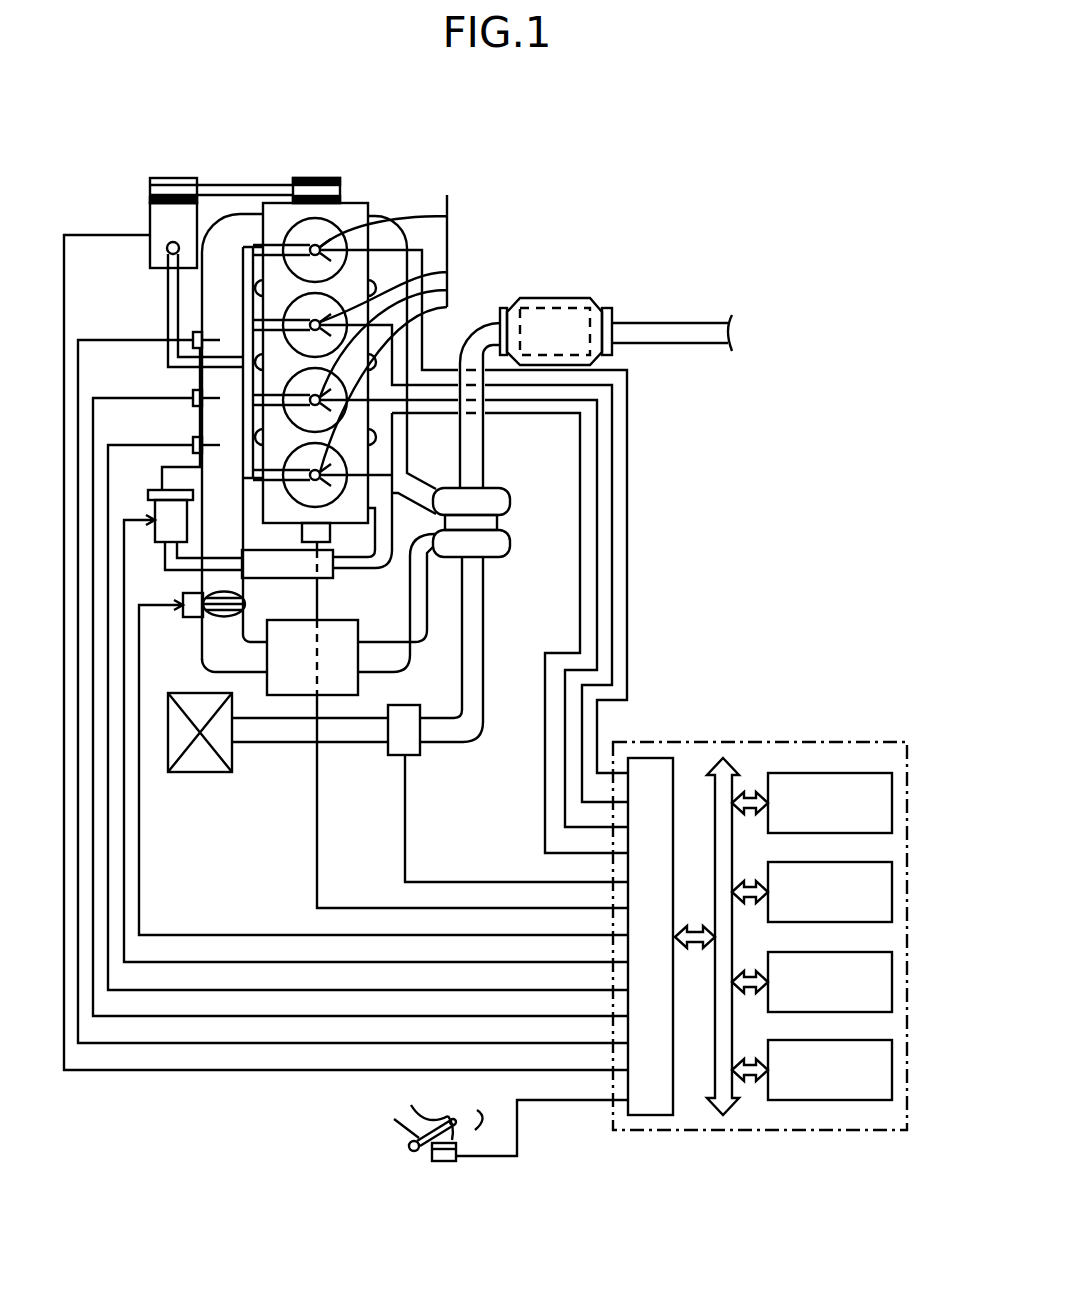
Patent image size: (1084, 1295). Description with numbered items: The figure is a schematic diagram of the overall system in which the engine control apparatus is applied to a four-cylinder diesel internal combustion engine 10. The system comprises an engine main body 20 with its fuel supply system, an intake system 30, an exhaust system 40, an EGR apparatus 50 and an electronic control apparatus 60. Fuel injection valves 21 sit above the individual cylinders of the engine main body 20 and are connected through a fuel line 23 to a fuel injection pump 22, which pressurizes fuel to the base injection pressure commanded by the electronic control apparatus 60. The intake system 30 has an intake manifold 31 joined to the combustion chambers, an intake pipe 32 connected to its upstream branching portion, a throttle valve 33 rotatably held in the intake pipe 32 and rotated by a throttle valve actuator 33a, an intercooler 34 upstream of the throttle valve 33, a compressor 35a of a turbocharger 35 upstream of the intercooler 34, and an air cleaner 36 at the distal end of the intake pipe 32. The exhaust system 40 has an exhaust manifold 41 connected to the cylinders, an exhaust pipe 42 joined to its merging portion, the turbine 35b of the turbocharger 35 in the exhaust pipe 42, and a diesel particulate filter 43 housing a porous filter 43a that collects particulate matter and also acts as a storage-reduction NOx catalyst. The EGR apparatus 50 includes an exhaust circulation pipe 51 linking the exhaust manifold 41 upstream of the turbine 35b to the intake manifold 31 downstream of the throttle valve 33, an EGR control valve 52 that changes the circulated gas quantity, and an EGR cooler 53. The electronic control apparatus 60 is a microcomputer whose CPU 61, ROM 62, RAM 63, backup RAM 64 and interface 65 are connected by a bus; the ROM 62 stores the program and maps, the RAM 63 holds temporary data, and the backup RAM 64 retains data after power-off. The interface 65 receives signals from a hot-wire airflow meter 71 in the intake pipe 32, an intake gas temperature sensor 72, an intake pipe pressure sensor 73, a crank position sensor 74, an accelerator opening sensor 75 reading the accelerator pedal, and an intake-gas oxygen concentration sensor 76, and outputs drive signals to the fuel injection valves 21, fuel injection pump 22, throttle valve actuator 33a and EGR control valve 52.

The internal combustion engine 10 is at (378, 131).
The engine main body 20 is at (358, 344).
The fuel injection valves 21 is at (370, 200).
The fuel injection pump 22 is at (150, 222).
The fuel line 23 is at (168, 297).
The intake system 30 is at (345, 624).
The intake manifold 31 is at (199, 420).
The intake pipe 32 is at (390, 673).
The throttle valve 33 is at (383, 764).
The throttle valve actuator 33a is at (190, 620).
The intercooler 34 is at (264, 676).
The turbocharger 35 is at (499, 523).
The compressor 35a is at (491, 558).
The turbine 35b is at (488, 488).
The air cleaner 36 is at (200, 772).
The exhaust system 40 is at (550, 356).
The exhaust manifold 41 is at (410, 447).
The exhaust pipe 42 is at (654, 326).
The diesel particulate filter (DPNR) 43 is at (578, 313).
The filter 43a is at (587, 306).
The EGR apparatus 50 is at (323, 516).
The exhaust circulation pipe 51 is at (375, 570).
The EGR control valve 52 is at (157, 540).
The EGR cooler 53 is at (286, 578).
The electronic control apparatus 60 is at (784, 947).
The CPU 61 is at (892, 803).
The ROM 62 is at (892, 892).
The RAM 63 is at (892, 982).
The backup RAM 64 is at (892, 1070).
The interface 65 is at (678, 1095).
The airflow meter 71 is at (413, 754).
The intake gas temperature sensor 72 is at (193, 445).
The intake pipe pressure sensor 73 is at (193, 397).
The crank position sensor 74 is at (330, 527).
The accelerator opening sensor 75 is at (456, 1164).
The intake-gas oxygen concentration sensor 76 is at (193, 334).